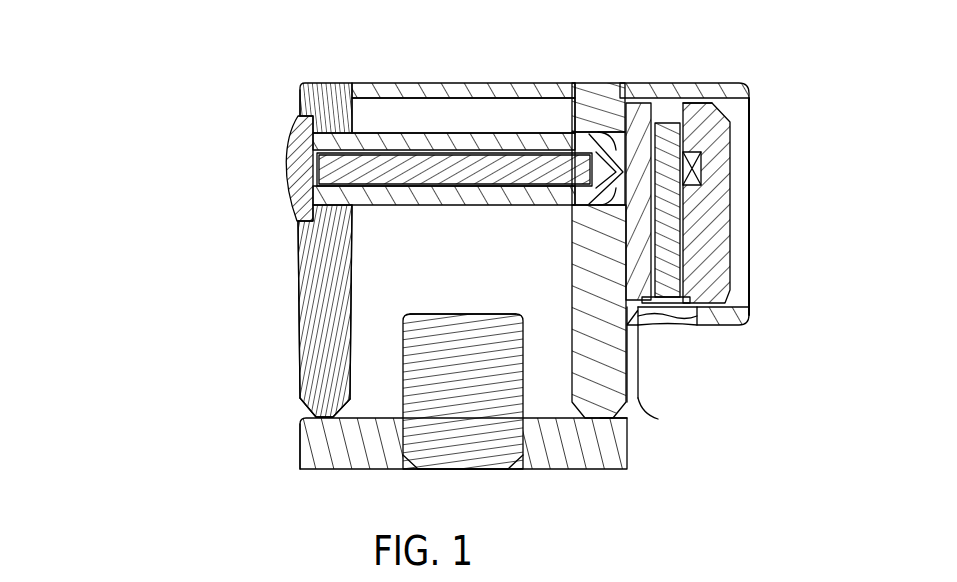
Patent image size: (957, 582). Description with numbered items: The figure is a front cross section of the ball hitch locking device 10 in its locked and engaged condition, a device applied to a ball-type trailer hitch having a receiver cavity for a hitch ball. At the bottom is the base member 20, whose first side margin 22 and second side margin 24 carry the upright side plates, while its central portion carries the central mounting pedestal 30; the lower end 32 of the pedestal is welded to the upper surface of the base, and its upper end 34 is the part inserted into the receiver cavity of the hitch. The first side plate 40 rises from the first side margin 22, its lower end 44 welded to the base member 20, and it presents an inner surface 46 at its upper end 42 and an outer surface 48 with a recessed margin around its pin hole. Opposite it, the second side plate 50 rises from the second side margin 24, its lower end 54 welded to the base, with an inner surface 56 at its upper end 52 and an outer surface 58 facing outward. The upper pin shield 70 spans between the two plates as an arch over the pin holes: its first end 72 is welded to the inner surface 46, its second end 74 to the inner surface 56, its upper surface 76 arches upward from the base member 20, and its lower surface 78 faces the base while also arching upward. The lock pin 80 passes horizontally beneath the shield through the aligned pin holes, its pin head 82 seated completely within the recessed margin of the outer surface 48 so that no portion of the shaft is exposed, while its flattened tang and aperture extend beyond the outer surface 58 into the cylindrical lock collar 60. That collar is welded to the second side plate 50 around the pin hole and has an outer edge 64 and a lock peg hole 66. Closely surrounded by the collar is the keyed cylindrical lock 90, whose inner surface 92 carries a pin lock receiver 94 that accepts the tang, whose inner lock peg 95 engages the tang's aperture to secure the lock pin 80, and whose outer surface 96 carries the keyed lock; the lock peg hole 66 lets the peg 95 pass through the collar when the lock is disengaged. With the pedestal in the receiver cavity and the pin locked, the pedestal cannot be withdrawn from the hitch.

The ball hitch locking device 10 is at (35, 150).
The base member 20 is at (576, 471).
The first side margin 22 is at (302, 418).
The second side margin 24 is at (652, 419).
The central mounting pedestal 30 is at (455, 455).
The lower end 32 is at (482, 471).
The upper end 34 is at (432, 314).
The first side plate 40 is at (297, 317).
The upper end 42 is at (302, 86).
The lower end 44 is at (314, 410).
The inner surface 46 is at (352, 238).
The outer surface 48 is at (298, 268).
The second side plate 50 is at (628, 370).
The upper end 52 is at (622, 84).
The lower end 54 is at (634, 400).
The inner surface 56 is at (572, 262).
The outer surface 58 is at (670, 313).
The cylindrical lock collar 60 is at (745, 82).
The outer edge 64 is at (751, 315).
The lock peg hole 66 is at (697, 319).
The upper pin shield 70 is at (508, 82).
The first end 72 is at (350, 83).
The second end 74 is at (580, 83).
The upper surface 76 is at (435, 82).
The lower surface 78 is at (415, 102).
The lock pin 80 is at (287, 172).
The pin head 82 is at (290, 196).
The cylindrical lock 90 is at (733, 189).
The inner surface 92 is at (690, 262).
The pin lock receiver 94 is at (702, 150).
The inner lock peg 95 is at (690, 115).
The outer surface 96 is at (742, 231).